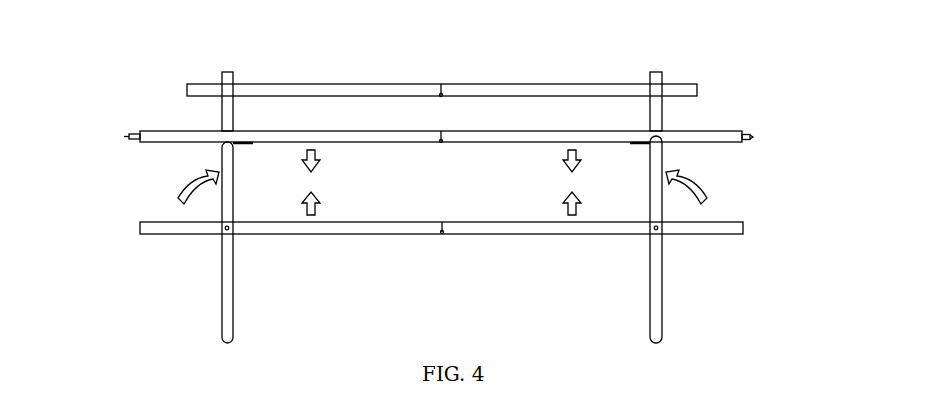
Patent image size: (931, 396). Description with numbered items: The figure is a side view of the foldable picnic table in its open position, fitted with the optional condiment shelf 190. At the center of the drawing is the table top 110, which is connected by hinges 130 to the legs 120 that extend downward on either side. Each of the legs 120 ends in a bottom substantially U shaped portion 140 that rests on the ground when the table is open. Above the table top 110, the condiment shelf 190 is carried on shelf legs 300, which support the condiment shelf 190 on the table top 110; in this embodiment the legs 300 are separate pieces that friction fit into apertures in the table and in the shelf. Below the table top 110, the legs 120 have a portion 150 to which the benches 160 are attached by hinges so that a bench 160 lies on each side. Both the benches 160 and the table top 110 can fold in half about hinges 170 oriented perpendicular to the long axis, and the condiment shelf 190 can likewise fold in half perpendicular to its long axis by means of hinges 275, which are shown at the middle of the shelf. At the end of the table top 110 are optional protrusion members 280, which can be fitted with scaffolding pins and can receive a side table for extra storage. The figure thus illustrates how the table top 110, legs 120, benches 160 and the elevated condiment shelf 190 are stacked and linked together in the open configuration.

The table top 110 is at (157, 132).
The legs 120 is at (221, 158).
The hinges 130 is at (649, 143).
The bottom substantially U shaped portion 140 is at (658, 338).
The portion 150 is at (222, 309).
The benches 160 is at (145, 231).
The hinges 170 is at (445, 232).
The condiment shelf 190 is at (192, 87).
The hinges 275 is at (442, 86).
The protrusion members 280 is at (754, 137).
The legs 300 is at (658, 112).